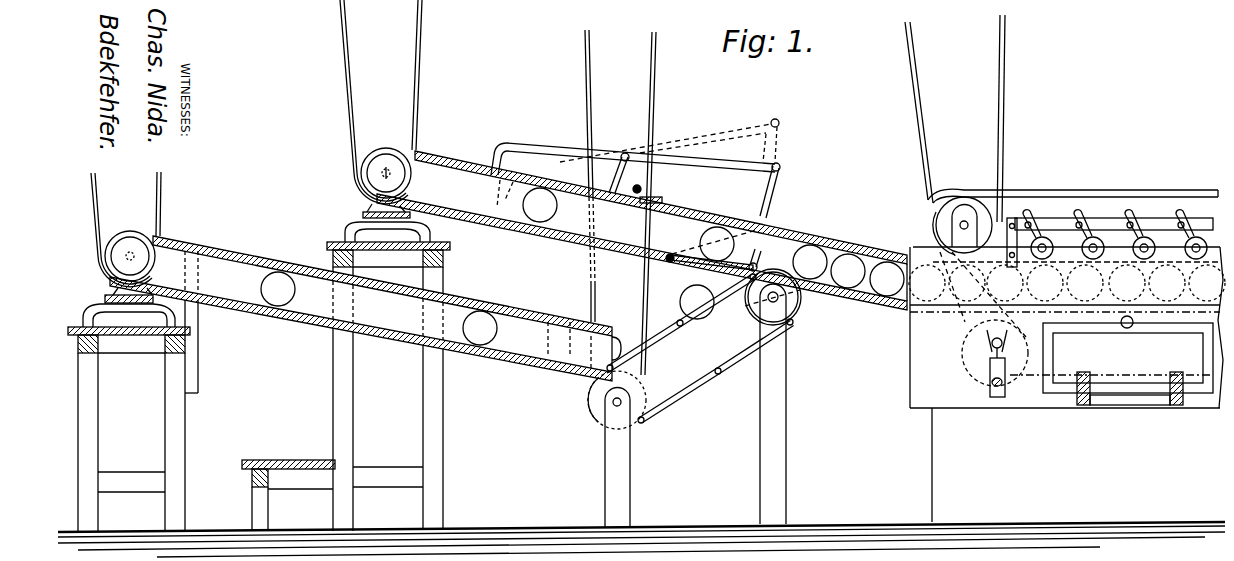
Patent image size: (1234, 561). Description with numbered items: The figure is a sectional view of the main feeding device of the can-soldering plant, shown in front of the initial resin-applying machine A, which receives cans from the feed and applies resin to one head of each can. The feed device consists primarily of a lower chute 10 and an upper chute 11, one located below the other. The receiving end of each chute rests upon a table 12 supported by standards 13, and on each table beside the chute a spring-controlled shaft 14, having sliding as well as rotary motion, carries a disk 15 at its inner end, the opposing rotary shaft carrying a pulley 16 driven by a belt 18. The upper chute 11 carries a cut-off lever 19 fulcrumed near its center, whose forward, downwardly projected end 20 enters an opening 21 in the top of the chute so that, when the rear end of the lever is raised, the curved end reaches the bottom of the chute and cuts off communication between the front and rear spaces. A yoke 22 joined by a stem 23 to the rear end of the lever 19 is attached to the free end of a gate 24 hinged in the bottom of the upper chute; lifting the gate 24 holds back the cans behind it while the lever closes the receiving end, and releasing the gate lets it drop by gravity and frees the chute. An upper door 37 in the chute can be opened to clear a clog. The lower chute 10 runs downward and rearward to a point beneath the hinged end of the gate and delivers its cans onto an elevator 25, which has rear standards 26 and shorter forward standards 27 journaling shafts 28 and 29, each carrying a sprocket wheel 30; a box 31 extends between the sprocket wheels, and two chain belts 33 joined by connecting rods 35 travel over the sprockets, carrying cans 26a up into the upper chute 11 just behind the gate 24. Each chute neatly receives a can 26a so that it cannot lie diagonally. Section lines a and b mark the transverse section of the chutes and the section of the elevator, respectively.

The lower chute 10 is at (365, 308).
The upper chute 11 is at (457, 153).
The table 12 is at (256, 265).
The standards 13 is at (99, 452).
The spring-controlled shaft 14 is at (128, 252).
The disk 15 is at (115, 266).
The pulley 16 is at (105, 245).
The belt 18 is at (158, 192).
The cut-off lever 19 is at (748, 123).
The downwardly projected end of cut-off lever 20 is at (482, 172).
The opening 21 is at (517, 173).
The yoke 22 is at (763, 233).
The stem 23 is at (780, 177).
The gate 24 is at (702, 265).
The elevator 25 is at (734, 358).
The rear standards 26 is at (773, 404).
The can 26a is at (582, 266).
The forward standards 27 is at (619, 458).
The shaft 28 is at (616, 408).
The shaft 29 is at (773, 292).
The sprocket wheel 30 is at (801, 305).
The box 31 is at (681, 327).
The chain belts 33 is at (688, 392).
The connecting rods 35 is at (676, 323).
The upper door 37 is at (655, 178).
The resin-applying machine A is at (1065, 268).
The section line a— a is at (247, 337).
The section line b— b is at (728, 407).